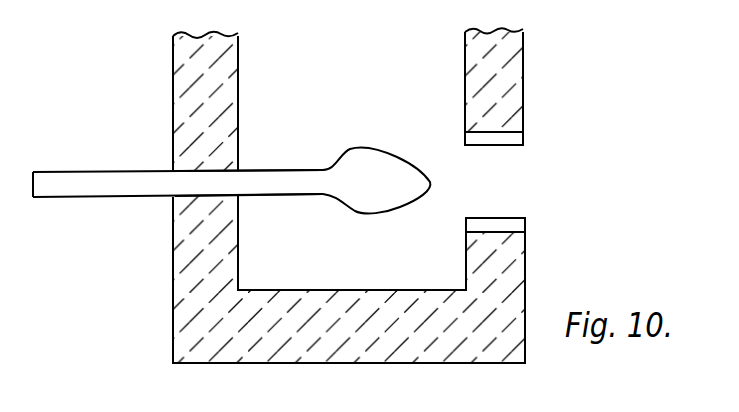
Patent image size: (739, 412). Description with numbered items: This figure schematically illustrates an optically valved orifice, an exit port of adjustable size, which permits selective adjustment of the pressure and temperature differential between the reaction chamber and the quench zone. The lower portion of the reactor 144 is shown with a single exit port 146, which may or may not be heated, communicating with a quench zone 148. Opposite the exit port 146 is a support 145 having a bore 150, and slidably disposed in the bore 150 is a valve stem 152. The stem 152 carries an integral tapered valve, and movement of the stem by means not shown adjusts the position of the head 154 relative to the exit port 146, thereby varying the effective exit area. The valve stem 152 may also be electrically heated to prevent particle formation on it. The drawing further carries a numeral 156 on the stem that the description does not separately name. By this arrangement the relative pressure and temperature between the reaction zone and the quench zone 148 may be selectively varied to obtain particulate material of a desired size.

The reactor 144 is at (162, 107).
The support 145 is at (238, 73).
The exit port 146 is at (510, 145).
The quench zone 148 is at (658, 253).
The bore 150 is at (252, 168).
The valve stem 152 is at (280, 201).
The head 154 is at (383, 162).
The rod 156 is at (87, 189).